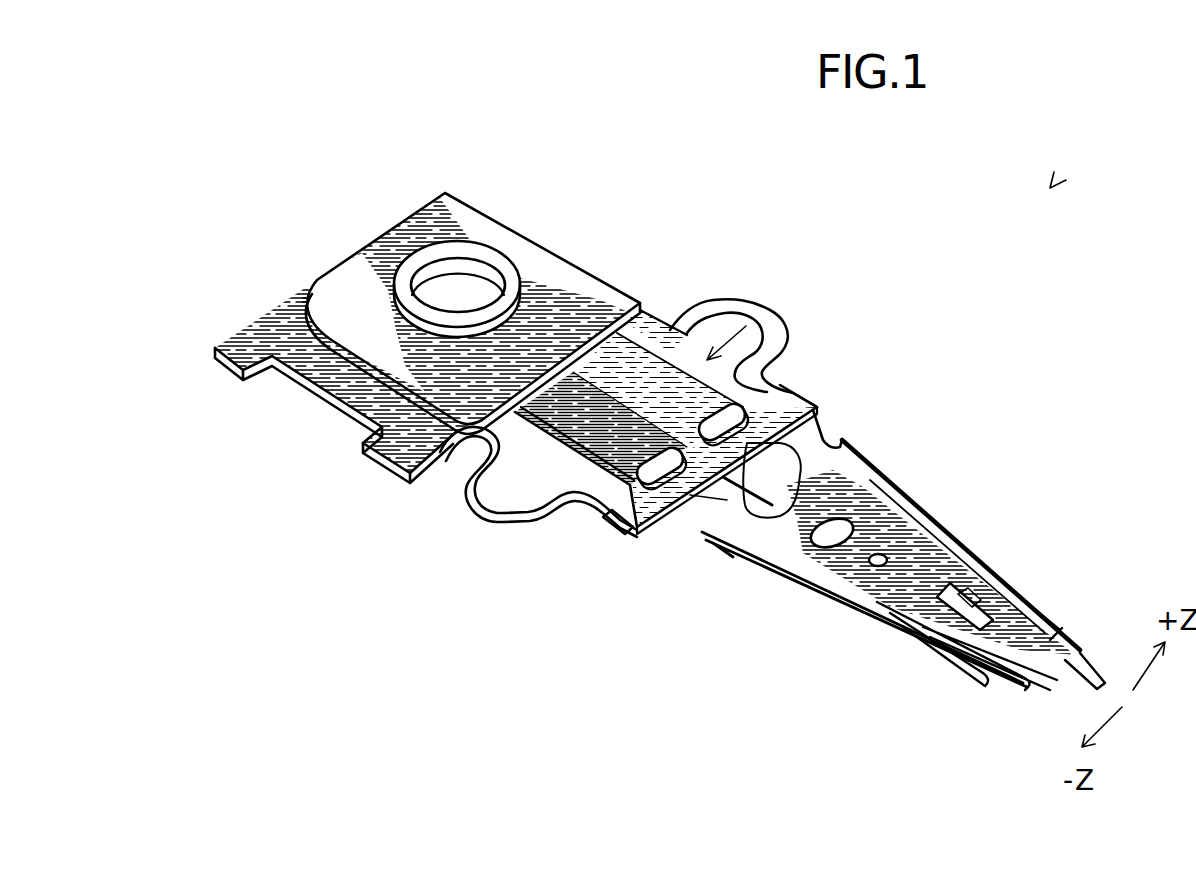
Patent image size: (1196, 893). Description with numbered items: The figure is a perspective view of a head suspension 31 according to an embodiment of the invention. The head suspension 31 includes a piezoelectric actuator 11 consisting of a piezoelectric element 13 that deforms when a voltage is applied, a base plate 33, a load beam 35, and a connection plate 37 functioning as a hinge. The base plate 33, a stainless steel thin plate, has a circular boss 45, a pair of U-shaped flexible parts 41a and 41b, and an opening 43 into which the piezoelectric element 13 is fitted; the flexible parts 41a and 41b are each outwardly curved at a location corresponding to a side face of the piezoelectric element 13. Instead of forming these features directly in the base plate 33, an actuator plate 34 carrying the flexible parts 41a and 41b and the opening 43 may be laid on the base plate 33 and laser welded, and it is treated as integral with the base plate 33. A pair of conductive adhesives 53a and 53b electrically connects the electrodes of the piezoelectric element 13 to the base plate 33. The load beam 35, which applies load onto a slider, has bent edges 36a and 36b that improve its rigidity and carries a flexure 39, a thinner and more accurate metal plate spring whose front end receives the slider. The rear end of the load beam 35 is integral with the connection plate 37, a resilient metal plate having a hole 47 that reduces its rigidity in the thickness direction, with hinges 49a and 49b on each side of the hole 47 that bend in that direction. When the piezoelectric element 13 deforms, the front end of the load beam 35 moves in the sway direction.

The head suspension 31 is at (1050, 188).
The base plate 33 is at (427, 378).
The actuator plate 34 is at (443, 511).
The circular boss 45 is at (460, 262).
The piezoelectric element 13 is at (643, 367).
The piezoelectric actuator 11 is at (688, 312).
The flexible part 41a is at (790, 385).
The flexible part 41b is at (490, 502).
The opening 43 is at (566, 490).
The hinge 49a is at (747, 412).
The hinge 49b is at (655, 482).
The conductive adhesive 53a is at (790, 325).
The conductive adhesive 53b is at (633, 537).
The load beam 35 is at (884, 573).
The bent edge 36a is at (953, 533).
The bent edge 36b is at (815, 578).
The connection plate 37 is at (825, 440).
The hole 47 is at (702, 543).
The flexure 39 is at (990, 672).